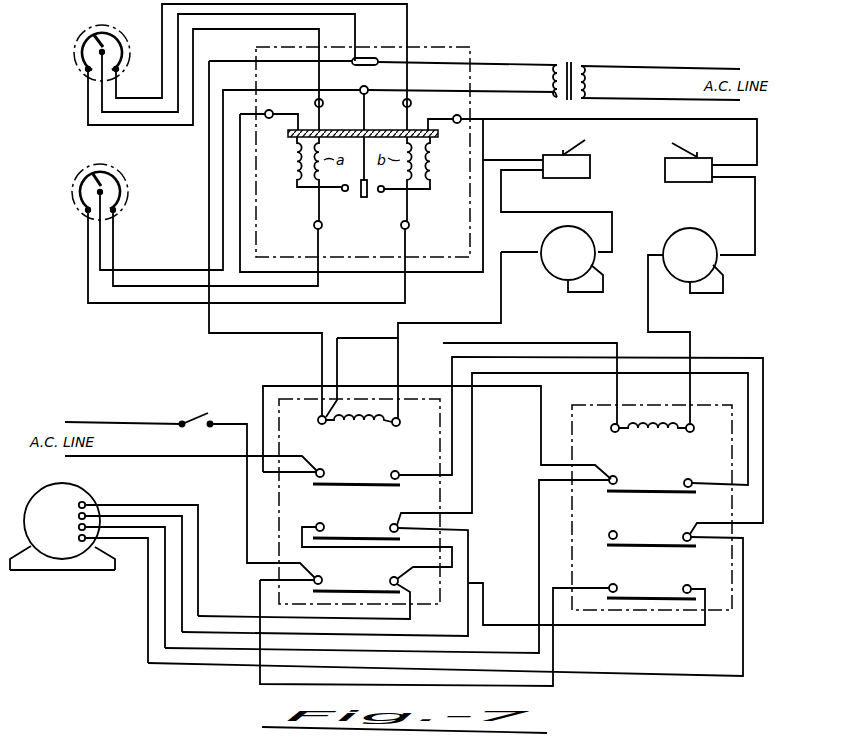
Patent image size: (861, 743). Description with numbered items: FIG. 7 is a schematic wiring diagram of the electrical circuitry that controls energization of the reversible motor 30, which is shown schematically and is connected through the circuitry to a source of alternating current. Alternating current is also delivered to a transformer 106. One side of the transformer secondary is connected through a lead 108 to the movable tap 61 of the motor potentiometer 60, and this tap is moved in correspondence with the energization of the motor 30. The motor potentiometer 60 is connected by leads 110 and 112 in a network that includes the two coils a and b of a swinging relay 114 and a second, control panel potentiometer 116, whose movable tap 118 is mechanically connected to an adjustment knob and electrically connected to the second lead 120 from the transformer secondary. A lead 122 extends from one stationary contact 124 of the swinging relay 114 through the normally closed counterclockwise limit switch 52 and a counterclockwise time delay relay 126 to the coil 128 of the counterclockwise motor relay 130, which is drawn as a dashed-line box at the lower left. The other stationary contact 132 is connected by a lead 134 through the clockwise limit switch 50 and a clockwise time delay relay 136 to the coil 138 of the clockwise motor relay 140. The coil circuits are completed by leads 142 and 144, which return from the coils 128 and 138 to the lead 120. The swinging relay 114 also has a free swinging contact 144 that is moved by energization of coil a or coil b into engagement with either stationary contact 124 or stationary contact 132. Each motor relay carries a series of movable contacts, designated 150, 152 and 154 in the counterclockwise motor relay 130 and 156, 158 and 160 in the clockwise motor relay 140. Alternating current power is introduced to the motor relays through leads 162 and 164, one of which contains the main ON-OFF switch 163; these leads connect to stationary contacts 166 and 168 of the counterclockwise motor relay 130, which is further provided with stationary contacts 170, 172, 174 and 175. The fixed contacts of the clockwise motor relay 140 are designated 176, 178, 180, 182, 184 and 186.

The reversible motor 30 is at (65, 550).
The clockwise limit switch 50 is at (681, 183).
The counterclockwise limit switch 52 is at (589, 164).
The motor potentiometer 60 is at (76, 206).
The movable tap 61 is at (112, 174).
The transformer 106 is at (573, 67).
The lead 108 is at (140, 270).
The lead 110 is at (145, 288).
The lead 112 is at (95, 305).
The swinging relay 114 is at (447, 252).
The control panel potentiometer 116 is at (76, 43).
The movable tap 118 is at (105, 32).
The second lead 120 is at (517, 45).
The lead 122 is at (242, 208).
The stationary contact 124 is at (340, 193).
The counterclockwise time delay relay 126 is at (556, 279).
The coil 128 is at (344, 426).
The counterclockwise motor relay 130 is at (284, 406).
The stationary contact 132 is at (383, 193).
The lead 134 is at (648, 122).
The clockwise time delay relay 136 is at (717, 240).
The coil 138 is at (644, 432).
The clockwise motor relay 140 is at (740, 434).
The lead 142 is at (228, 336).
The lead 144 is at (363, 199).
The movable contact 150 is at (340, 490).
The movable contact 152 is at (338, 532).
The movable contact 154 is at (362, 585).
The movable contact 156 is at (640, 489).
The movable contact 158 is at (636, 545).
The movable contact 160 is at (636, 596).
The lead 162 is at (150, 422).
The main ON-OFF switch 163 is at (194, 427).
The lead 164 is at (170, 458).
The stationary contact 166 is at (322, 472).
The stationary contact 168 is at (322, 575).
The stationary contact 170 is at (322, 522).
The stationary contact 172 is at (394, 523).
The stationary contact 174 is at (395, 471).
The stationary contact 175 is at (398, 576).
The fixed contact 176 is at (616, 475).
The fixed contact 178 is at (613, 530).
The fixed contact 180 is at (614, 583).
The fixed contact 182 is at (689, 584).
The fixed contact 184 is at (689, 532).
The fixed contact 186 is at (690, 478).